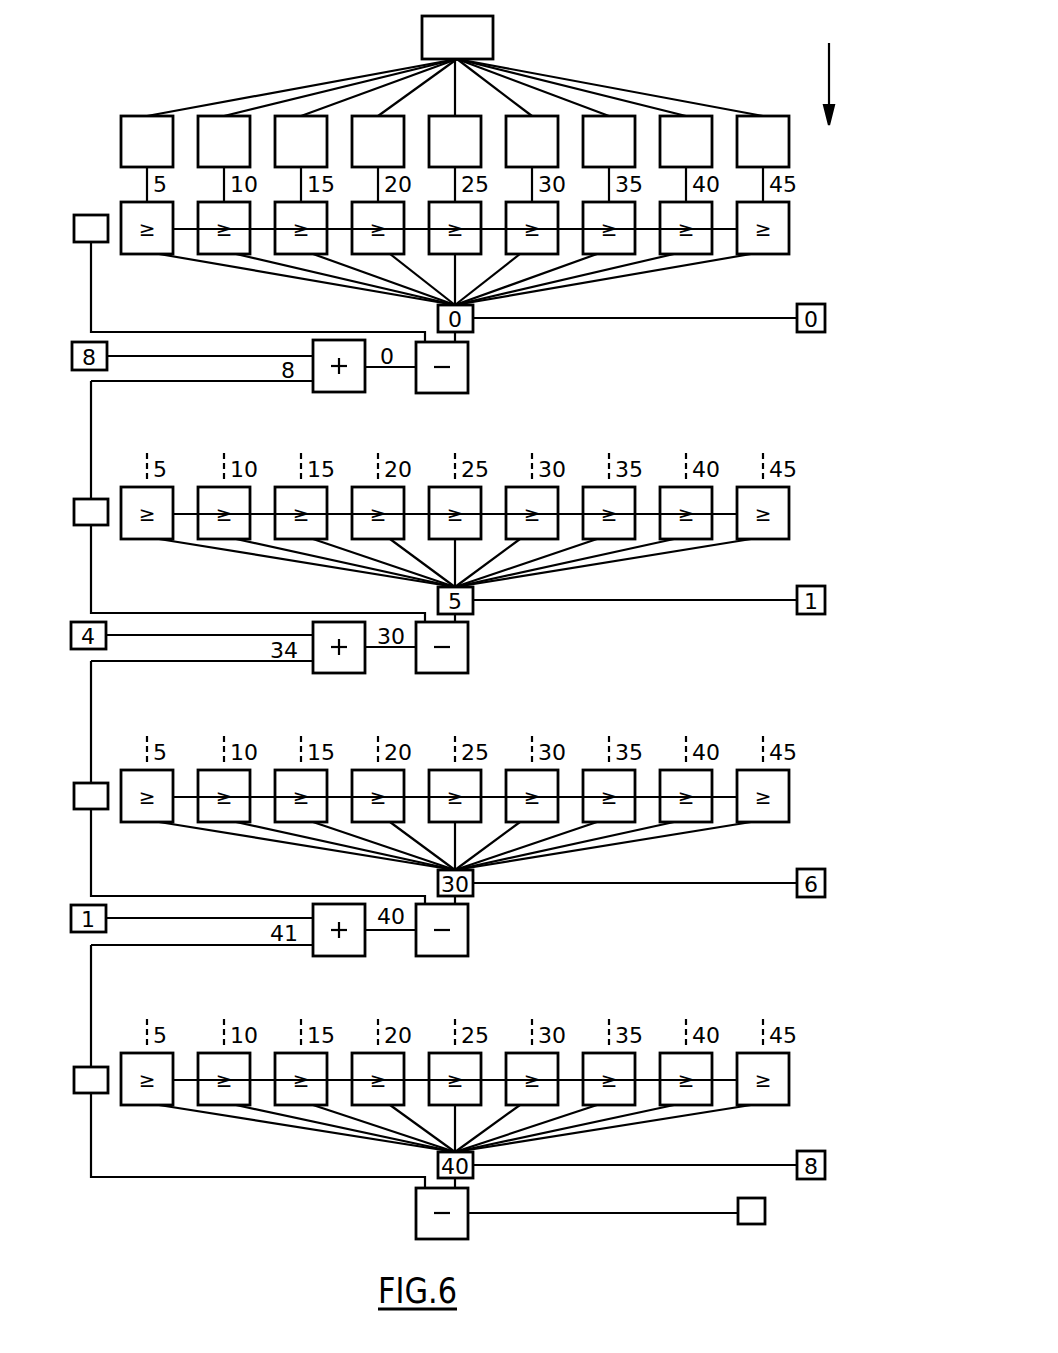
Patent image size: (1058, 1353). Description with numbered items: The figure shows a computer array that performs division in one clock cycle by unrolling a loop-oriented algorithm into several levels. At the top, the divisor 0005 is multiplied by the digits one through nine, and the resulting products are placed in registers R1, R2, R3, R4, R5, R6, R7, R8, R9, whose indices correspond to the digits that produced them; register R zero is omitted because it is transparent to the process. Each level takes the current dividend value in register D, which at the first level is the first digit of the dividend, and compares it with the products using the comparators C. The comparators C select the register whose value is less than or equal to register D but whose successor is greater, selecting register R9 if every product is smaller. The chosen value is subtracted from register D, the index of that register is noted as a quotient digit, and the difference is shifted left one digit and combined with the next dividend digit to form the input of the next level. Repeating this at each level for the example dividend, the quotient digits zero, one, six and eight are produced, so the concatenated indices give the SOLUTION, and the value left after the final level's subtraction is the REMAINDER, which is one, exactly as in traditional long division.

The register R1 is at (140, 123).
The register R2 is at (220, 124).
The register R3 is at (294, 124).
The register R4 is at (368, 124).
The register R5 is at (448, 124).
The register R6 is at (533, 124).
The register R7 is at (606, 124).
The register R8 is at (683, 124).
The register R9 is at (768, 124).
The register D is at (73, 228).
The comparators C is at (835, 655).
The divisor 0005 is at (457, 37).
The solution SOLUTION is at (829, 65).
The remainder REMAINDER is at (747, 1226).